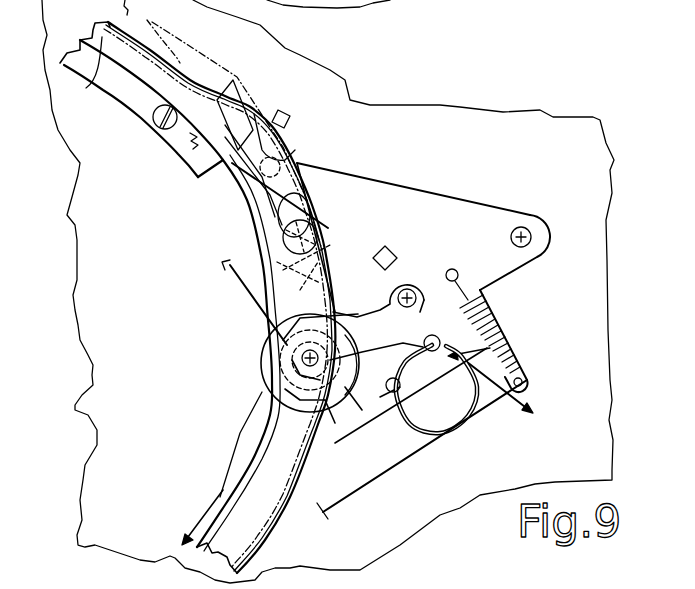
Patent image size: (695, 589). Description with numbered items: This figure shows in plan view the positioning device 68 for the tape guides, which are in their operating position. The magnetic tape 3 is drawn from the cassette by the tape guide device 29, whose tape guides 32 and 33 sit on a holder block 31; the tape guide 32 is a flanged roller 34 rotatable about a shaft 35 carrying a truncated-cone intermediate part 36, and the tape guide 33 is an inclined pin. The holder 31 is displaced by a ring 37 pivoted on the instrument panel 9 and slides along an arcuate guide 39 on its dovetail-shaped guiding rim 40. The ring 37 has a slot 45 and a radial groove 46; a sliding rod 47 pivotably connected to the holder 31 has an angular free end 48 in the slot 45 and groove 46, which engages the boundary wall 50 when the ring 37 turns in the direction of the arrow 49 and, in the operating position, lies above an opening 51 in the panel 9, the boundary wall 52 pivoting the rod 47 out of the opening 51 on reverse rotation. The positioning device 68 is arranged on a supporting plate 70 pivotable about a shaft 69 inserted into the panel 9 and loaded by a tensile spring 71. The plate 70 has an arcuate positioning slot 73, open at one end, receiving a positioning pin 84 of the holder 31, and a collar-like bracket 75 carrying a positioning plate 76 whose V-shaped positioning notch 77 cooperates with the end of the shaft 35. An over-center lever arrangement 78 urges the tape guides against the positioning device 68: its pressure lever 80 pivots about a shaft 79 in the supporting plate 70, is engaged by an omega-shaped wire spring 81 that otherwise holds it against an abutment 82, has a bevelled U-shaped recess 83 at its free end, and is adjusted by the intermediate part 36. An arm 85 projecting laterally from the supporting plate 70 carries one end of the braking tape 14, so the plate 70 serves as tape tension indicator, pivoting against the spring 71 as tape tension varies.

The magnetic tape 3 is at (195, 147).
The instrument panel 9 is at (613, 145).
The braking tape 14 is at (380, 478).
The tape guide device 29 is at (249, 195).
The holder block 31 is at (293, 167).
The tape guide 32 is at (290, 313).
The tape guide 33 is at (283, 232).
The roller 34 is at (292, 360).
The shaft 35 is at (280, 336).
The intermediate part 36 is at (300, 405).
The ring 37 is at (260, 523).
The arcuate guide 39 is at (135, 98).
The guiding rim 40 is at (83, 69).
The slot 45 is at (238, 122).
The groove 46 is at (236, 68).
The sliding rod 47 is at (268, 147).
The angular free end 48 is at (283, 115).
The arrow 49 is at (199, 520).
The boundary wall 50 is at (103, 15).
The opening 51 is at (152, 27).
The boundary wall 52 is at (290, 172).
The positioning device 68 is at (301, 356).
The shaft 69 is at (528, 226).
The supporting plate 70 is at (437, 192).
The tensile spring 71 is at (487, 327).
The positioning slot 73 is at (300, 290).
The bracket 75 is at (283, 414).
The positioning plate 76 is at (285, 389).
The positioning notch 77 is at (342, 403).
The over-center lever arrangement 78 is at (513, 430).
The shaft 79 is at (410, 300).
The pressure lever 80 is at (432, 334).
The wire spring 81 is at (415, 422).
The abutment 82 is at (386, 247).
The U-shaped recess 83 is at (362, 332).
The positioning pin 84 is at (283, 270).
The arm 85 is at (520, 374).